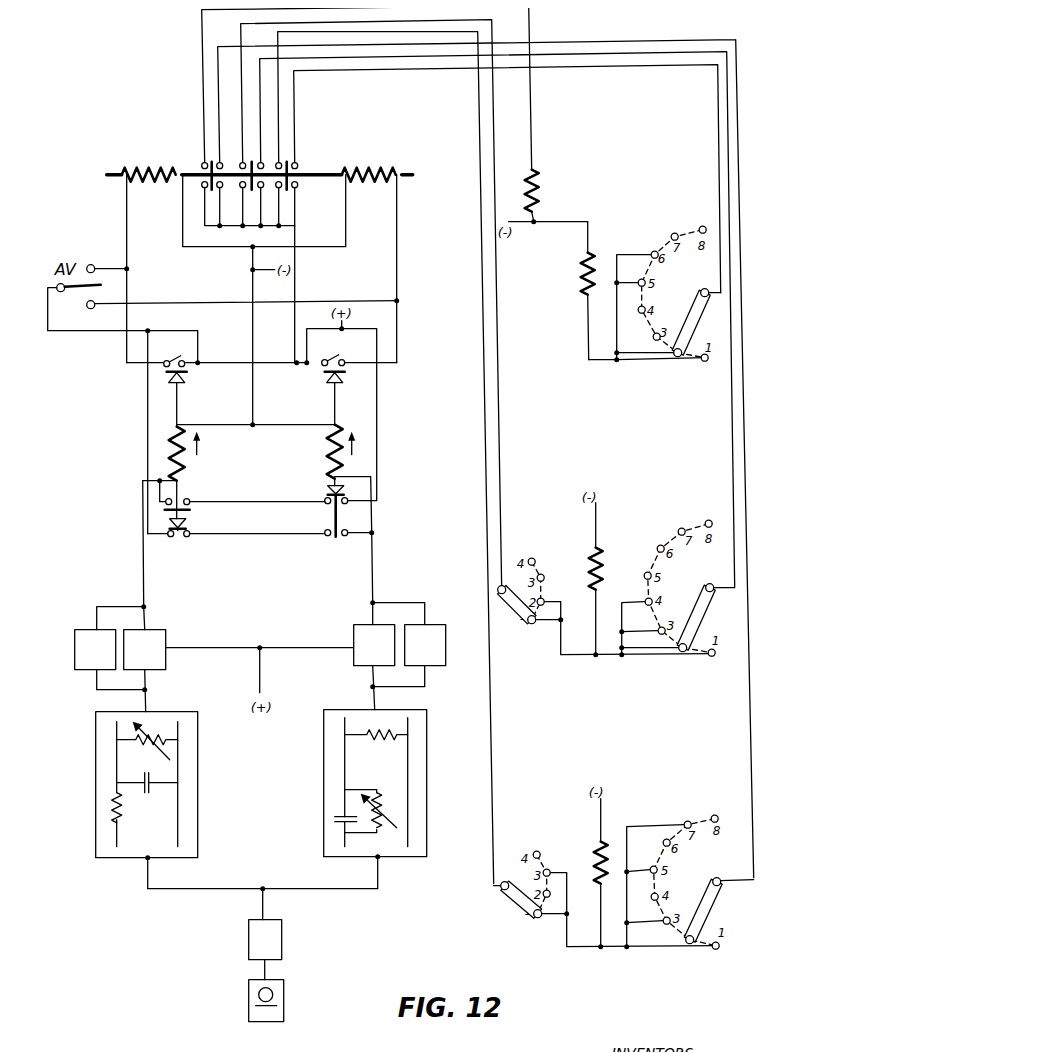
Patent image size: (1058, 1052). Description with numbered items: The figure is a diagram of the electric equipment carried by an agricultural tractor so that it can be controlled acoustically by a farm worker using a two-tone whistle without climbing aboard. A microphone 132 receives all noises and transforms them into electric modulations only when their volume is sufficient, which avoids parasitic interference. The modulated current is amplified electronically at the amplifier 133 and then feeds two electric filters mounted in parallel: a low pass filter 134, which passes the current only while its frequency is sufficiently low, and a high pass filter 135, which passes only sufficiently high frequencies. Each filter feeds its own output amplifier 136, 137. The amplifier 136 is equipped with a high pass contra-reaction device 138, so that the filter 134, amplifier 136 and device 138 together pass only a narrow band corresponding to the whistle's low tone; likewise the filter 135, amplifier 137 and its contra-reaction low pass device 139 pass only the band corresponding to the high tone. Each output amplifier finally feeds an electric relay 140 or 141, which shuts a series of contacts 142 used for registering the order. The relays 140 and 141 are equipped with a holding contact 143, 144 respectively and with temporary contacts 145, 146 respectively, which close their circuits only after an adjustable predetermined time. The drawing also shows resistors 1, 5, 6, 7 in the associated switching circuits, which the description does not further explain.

The microphone 132 is at (282, 997).
The amplifier 133 is at (284, 940).
The low pass filter 134 is at (198, 787).
The high pass filter 135 is at (324, 790).
The output amplifier 136 is at (166, 661).
The output amplifier 137 is at (352, 655).
The contra-reaction device 138 is at (95, 650).
The contra-reaction low pass device 139 is at (425, 645).
The electric relay 140 is at (182, 481).
The electric relay 141 is at (333, 440).
The series of contacts 142 is at (209, 158).
The holding contact 143 is at (190, 500).
The holding contact 144 is at (325, 536).
The temporary contacts 145 is at (176, 355).
The temporary contacts 146 is at (323, 367).
The resistor 1 is at (592, 873).
The resistor 5 is at (578, 291).
The resistor 6 is at (541, 191).
The resistor 7 is at (587, 579).